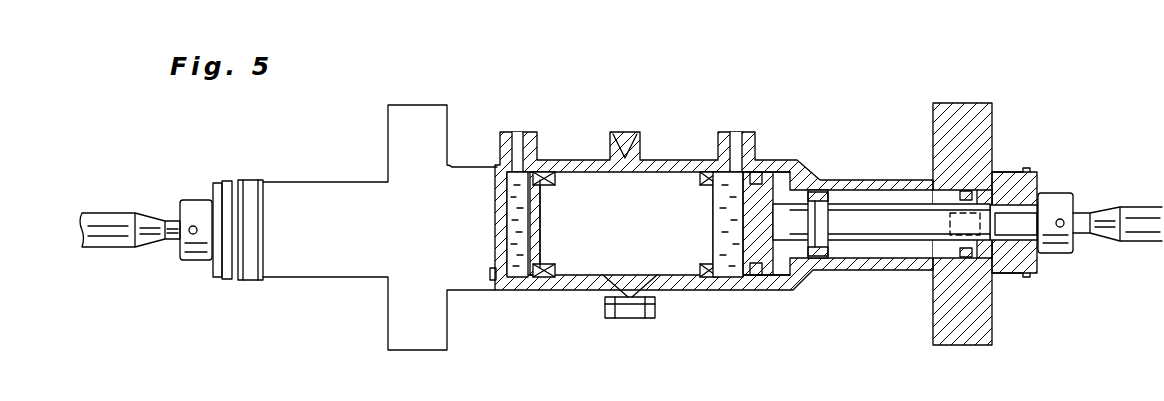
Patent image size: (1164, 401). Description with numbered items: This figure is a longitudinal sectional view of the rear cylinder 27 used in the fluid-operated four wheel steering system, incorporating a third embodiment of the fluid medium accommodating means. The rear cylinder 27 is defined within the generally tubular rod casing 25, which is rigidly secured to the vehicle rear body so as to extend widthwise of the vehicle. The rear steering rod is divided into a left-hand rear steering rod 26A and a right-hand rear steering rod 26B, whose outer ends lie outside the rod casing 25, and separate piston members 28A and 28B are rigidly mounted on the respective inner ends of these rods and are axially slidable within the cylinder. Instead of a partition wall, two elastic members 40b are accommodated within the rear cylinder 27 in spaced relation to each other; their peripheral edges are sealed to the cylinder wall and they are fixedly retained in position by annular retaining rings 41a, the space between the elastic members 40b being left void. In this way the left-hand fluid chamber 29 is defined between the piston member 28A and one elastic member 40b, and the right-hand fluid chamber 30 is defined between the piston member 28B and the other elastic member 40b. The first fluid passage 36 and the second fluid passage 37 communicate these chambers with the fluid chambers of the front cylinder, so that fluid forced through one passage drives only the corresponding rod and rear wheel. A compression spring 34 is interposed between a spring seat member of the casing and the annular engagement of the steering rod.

The rod casing 25 is at (587, 160).
The left-hand rear steering rod 26A is at (197, 252).
The right-hand rear steering rod 26B is at (923, 222).
The rear cylinder 27 is at (497, 186).
The left-hand piston member 28A is at (501, 255).
The right-hand piston member 28B is at (768, 278).
The left-hand fluid chamber 29 is at (521, 262).
The right-hand fluid chamber 30 is at (722, 278).
The compression spring 34 is at (823, 260).
The first fluid passage 36 is at (740, 130).
The second fluid passage 37 is at (522, 130).
The elastic member 40b is at (541, 212).
The annular retaining ring 41a is at (538, 163).